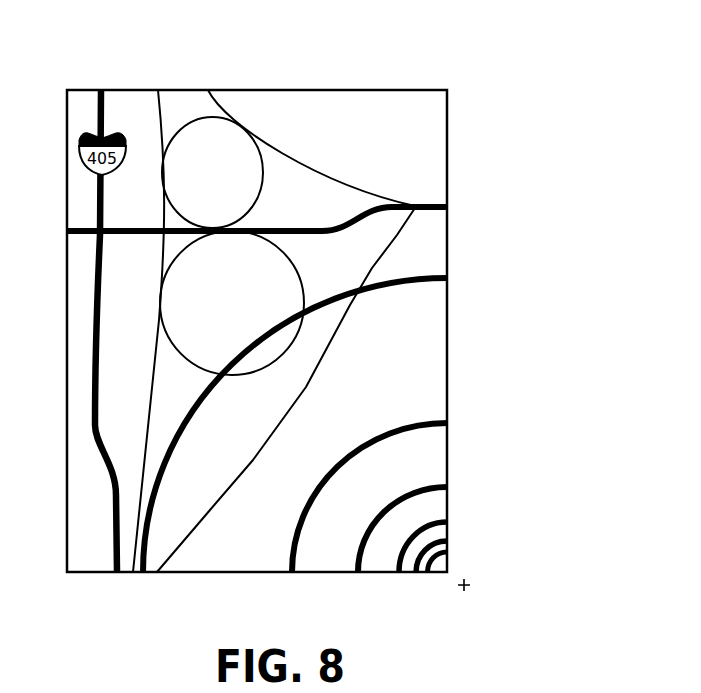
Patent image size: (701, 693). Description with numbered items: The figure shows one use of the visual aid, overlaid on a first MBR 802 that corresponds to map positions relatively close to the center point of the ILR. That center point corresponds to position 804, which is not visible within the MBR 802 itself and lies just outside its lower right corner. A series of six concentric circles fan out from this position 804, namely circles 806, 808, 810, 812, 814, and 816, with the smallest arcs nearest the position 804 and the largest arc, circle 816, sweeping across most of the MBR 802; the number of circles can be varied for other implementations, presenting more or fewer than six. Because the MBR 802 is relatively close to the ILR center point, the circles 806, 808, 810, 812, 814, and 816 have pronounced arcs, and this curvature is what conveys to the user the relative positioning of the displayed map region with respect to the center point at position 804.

The first MBR 802 is at (447, 122).
The circle 816 is at (453, 279).
The circle 814 is at (453, 423).
The circle 812 is at (453, 487).
The circle 810 is at (453, 523).
The circle 806 is at (451, 548).
The circle 808 is at (413, 577).
The position 804 is at (475, 585).